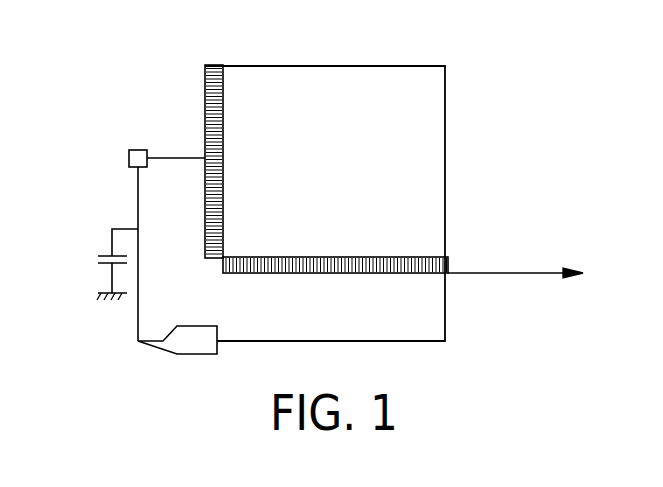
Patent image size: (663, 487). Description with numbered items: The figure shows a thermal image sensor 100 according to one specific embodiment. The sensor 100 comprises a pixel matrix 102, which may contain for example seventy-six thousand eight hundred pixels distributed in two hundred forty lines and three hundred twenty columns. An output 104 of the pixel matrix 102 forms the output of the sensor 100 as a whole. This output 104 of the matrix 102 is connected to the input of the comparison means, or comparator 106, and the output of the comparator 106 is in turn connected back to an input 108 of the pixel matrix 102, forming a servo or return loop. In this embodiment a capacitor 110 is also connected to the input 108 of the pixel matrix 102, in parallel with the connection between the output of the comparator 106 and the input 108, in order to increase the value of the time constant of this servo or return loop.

The sensor 100 is at (483, 80).
The pixel matrix 102 is at (445, 183).
The output 104 is at (510, 273).
The comparator 106 is at (193, 342).
The input 108 is at (175, 157).
The capacitor 110 is at (103, 252).